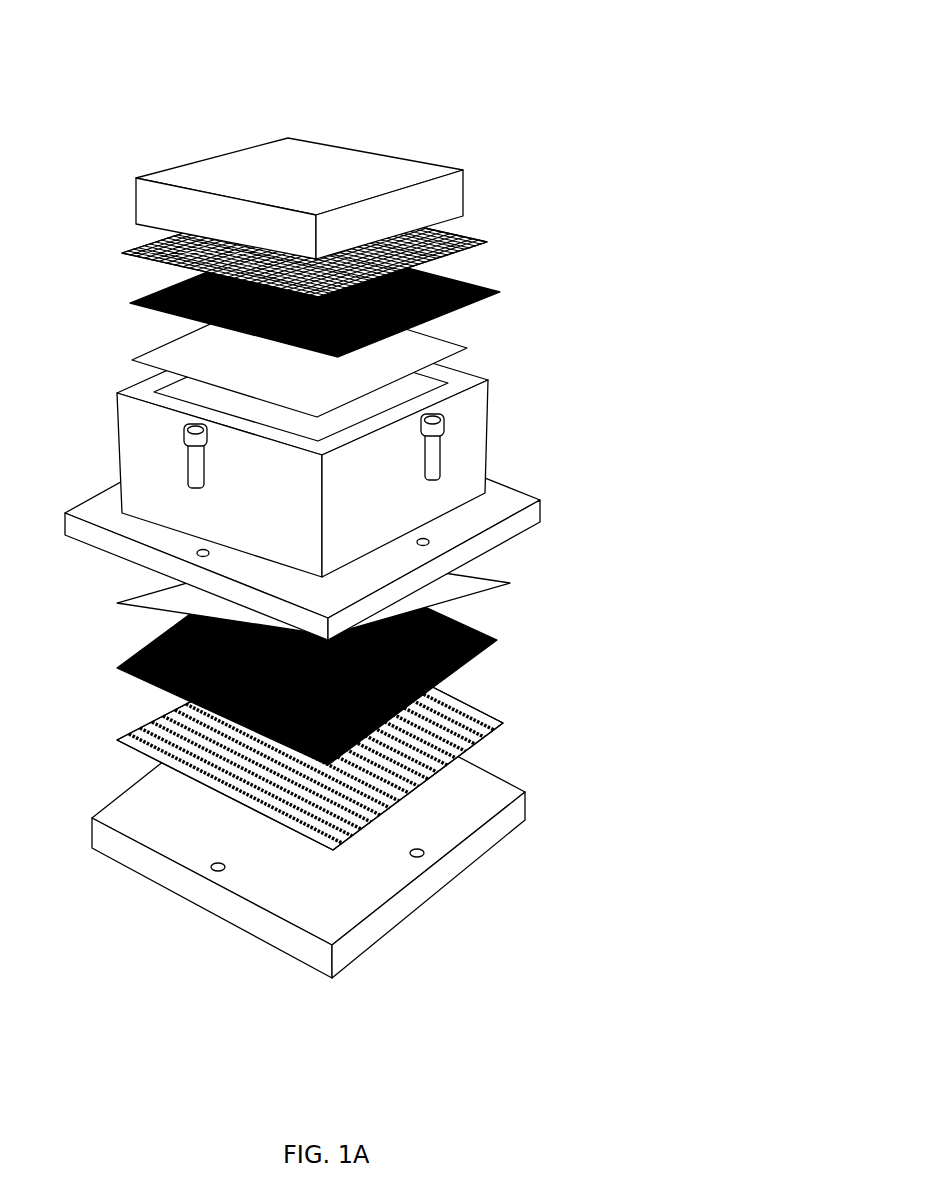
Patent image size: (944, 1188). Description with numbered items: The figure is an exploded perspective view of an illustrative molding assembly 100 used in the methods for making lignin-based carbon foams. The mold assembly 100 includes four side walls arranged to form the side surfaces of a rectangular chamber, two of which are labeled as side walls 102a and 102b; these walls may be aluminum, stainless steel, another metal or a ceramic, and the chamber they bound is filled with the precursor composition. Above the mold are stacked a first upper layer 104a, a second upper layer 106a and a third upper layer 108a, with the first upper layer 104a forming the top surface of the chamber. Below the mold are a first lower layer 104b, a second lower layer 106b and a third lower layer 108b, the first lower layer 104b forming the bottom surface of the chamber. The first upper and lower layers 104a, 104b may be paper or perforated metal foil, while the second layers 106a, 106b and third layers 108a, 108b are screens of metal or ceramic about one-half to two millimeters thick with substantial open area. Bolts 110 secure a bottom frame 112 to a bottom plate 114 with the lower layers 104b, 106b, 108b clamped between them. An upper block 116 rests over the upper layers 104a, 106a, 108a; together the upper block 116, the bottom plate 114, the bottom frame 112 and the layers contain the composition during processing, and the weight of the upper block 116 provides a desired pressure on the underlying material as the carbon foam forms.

The molding assembly 100 is at (425, 91).
The side wall 102a is at (407, 494).
The side wall 102b is at (298, 517).
The first upper layer 104a is at (467, 353).
The first lower layer 104b is at (508, 583).
The second upper layer 106a is at (468, 285).
The second lower layer 106b is at (497, 643).
The third upper layer 108a is at (465, 232).
The third lower layer 108b is at (507, 722).
The bolts 110 is at (185, 455).
The bottom frame 112 is at (538, 490).
The bottom plate 114 is at (526, 816).
The upper block 116 is at (467, 195).